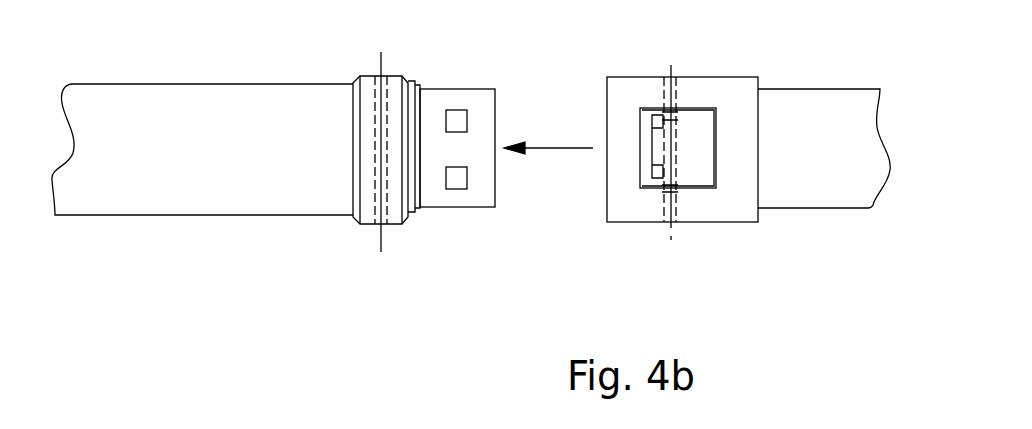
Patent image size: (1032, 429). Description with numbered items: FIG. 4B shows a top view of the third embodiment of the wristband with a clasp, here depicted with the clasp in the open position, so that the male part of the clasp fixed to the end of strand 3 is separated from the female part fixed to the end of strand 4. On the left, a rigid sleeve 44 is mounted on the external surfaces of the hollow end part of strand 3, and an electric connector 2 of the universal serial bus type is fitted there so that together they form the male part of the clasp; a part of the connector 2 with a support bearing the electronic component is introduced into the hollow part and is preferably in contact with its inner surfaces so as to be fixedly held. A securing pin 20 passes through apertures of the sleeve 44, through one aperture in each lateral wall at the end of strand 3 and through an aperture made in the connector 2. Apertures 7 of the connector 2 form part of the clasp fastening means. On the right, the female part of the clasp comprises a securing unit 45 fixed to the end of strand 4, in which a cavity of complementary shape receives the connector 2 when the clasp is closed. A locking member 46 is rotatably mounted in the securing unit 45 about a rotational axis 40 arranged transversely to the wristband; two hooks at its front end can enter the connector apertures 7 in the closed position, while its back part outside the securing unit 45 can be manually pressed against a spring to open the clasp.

The electric connector 2 is at (437, 198).
The strand 3 is at (193, 98).
The strand 4 is at (818, 97).
The apertures 7 is at (454, 120).
The securing pin 20 is at (378, 75).
The rotational axis 40 is at (670, 222).
The rigid sleeve 44 is at (365, 217).
The securing unit 45 is at (740, 98).
The locking member 46 is at (705, 177).